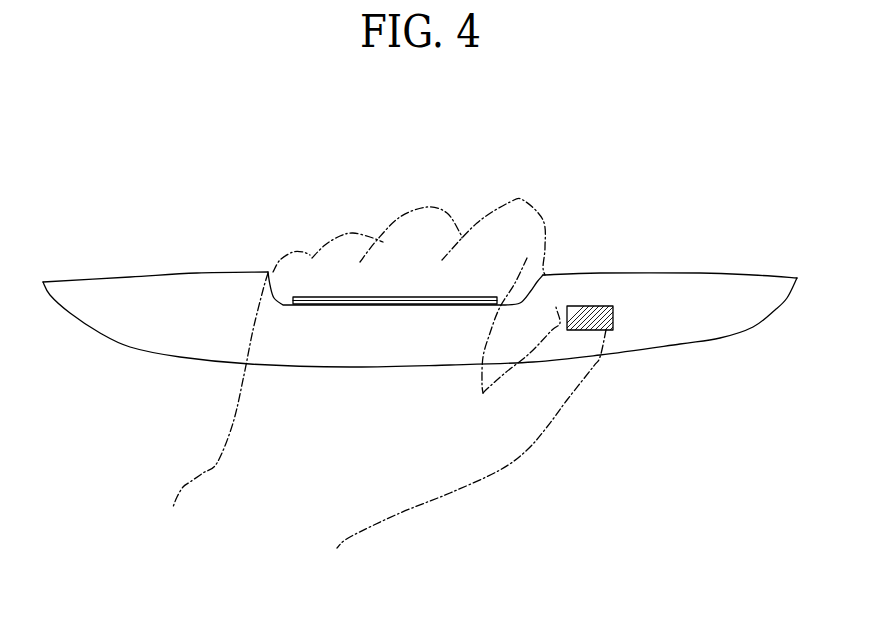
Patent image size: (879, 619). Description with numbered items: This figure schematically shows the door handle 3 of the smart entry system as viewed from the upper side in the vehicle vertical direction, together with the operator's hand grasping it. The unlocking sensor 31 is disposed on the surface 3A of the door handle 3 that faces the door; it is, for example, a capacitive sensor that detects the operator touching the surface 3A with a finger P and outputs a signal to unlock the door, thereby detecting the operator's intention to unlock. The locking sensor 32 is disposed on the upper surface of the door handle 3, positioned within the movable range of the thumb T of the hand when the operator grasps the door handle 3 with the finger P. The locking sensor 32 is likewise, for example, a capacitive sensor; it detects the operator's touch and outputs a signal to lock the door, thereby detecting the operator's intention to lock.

The door handle 3 is at (133, 295).
The surface of the door handle facing the door 3A is at (287, 303).
The unlocking sensor 31 is at (398, 300).
The locking sensor 32 is at (603, 303).
The finger P is at (433, 213).
The thumb T is at (556, 307).